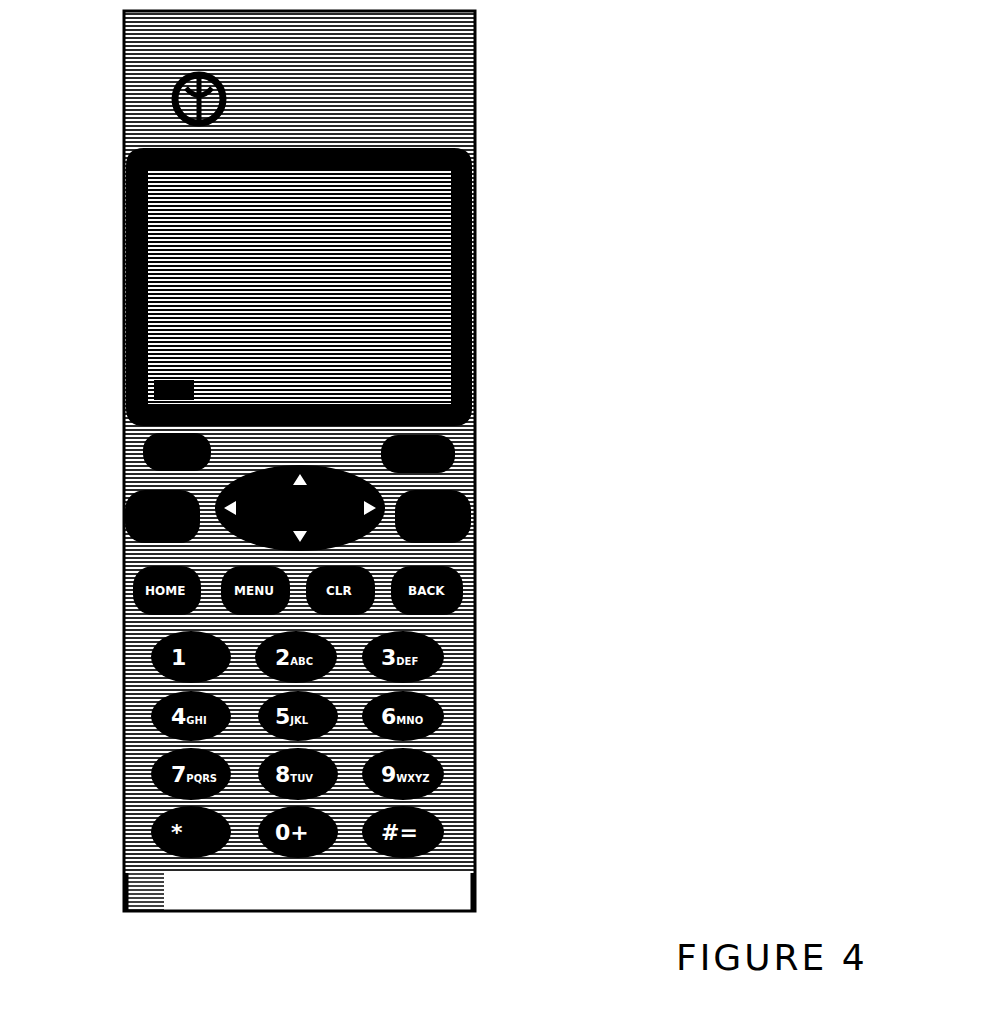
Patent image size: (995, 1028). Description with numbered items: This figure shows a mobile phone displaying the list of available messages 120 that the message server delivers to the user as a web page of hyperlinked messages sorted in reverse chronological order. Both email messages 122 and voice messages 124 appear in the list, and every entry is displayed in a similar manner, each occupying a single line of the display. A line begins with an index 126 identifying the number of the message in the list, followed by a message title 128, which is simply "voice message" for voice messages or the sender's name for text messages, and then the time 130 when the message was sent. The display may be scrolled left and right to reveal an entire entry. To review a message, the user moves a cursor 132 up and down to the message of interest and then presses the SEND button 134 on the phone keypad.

The list of available messages 120 is at (306, 296).
The email messages 122 is at (103, 245).
The voice messages 124 is at (103, 280).
The index 126 is at (90, 387).
The message title 128 is at (463, 398).
The time 130 is at (443, 343).
The cursor 132 is at (117, 166).
The SEND button 134 is at (118, 513).